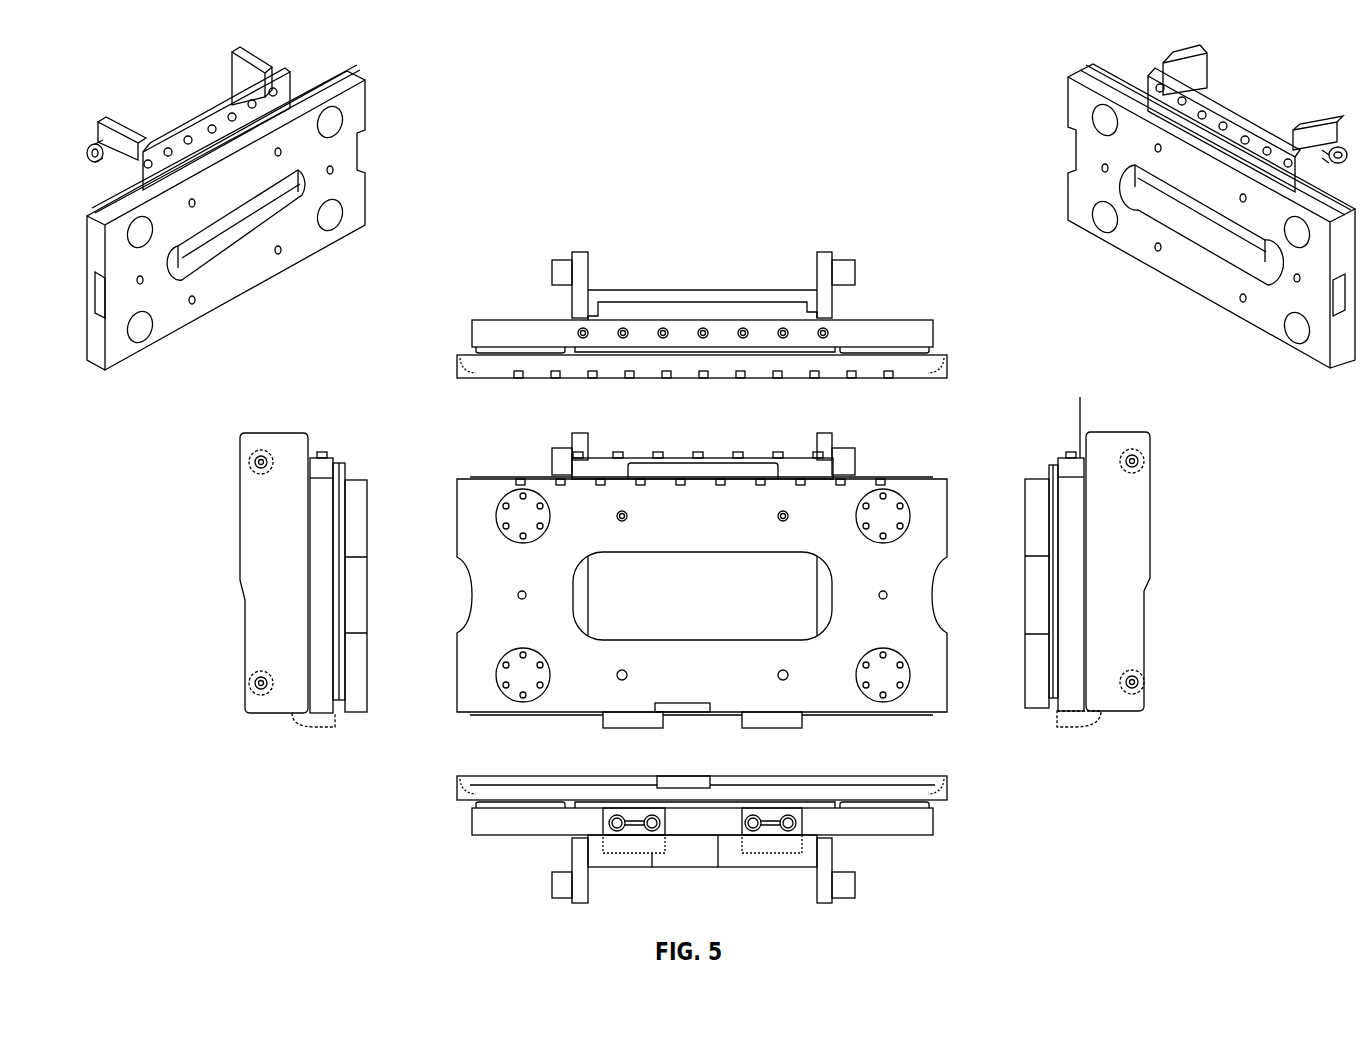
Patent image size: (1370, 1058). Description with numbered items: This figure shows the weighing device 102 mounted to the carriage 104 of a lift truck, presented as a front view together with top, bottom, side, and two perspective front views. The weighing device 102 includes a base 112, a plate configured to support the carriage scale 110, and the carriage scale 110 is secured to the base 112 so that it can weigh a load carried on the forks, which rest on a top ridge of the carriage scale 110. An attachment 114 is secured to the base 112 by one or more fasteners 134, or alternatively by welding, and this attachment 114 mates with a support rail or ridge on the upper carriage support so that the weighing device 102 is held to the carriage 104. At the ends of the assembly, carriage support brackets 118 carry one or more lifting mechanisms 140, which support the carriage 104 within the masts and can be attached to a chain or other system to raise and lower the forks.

The weighing device 102 is at (757, 556).
The carriage 104 is at (607, 229).
The carriage scale 110 is at (950, 362).
The base 112 is at (527, 320).
The attachment 114 is at (690, 302).
The carriage support brackets 118 is at (830, 252).
The fasteners 134 is at (1082, 742).
The lifting mechanisms 140 is at (855, 270).